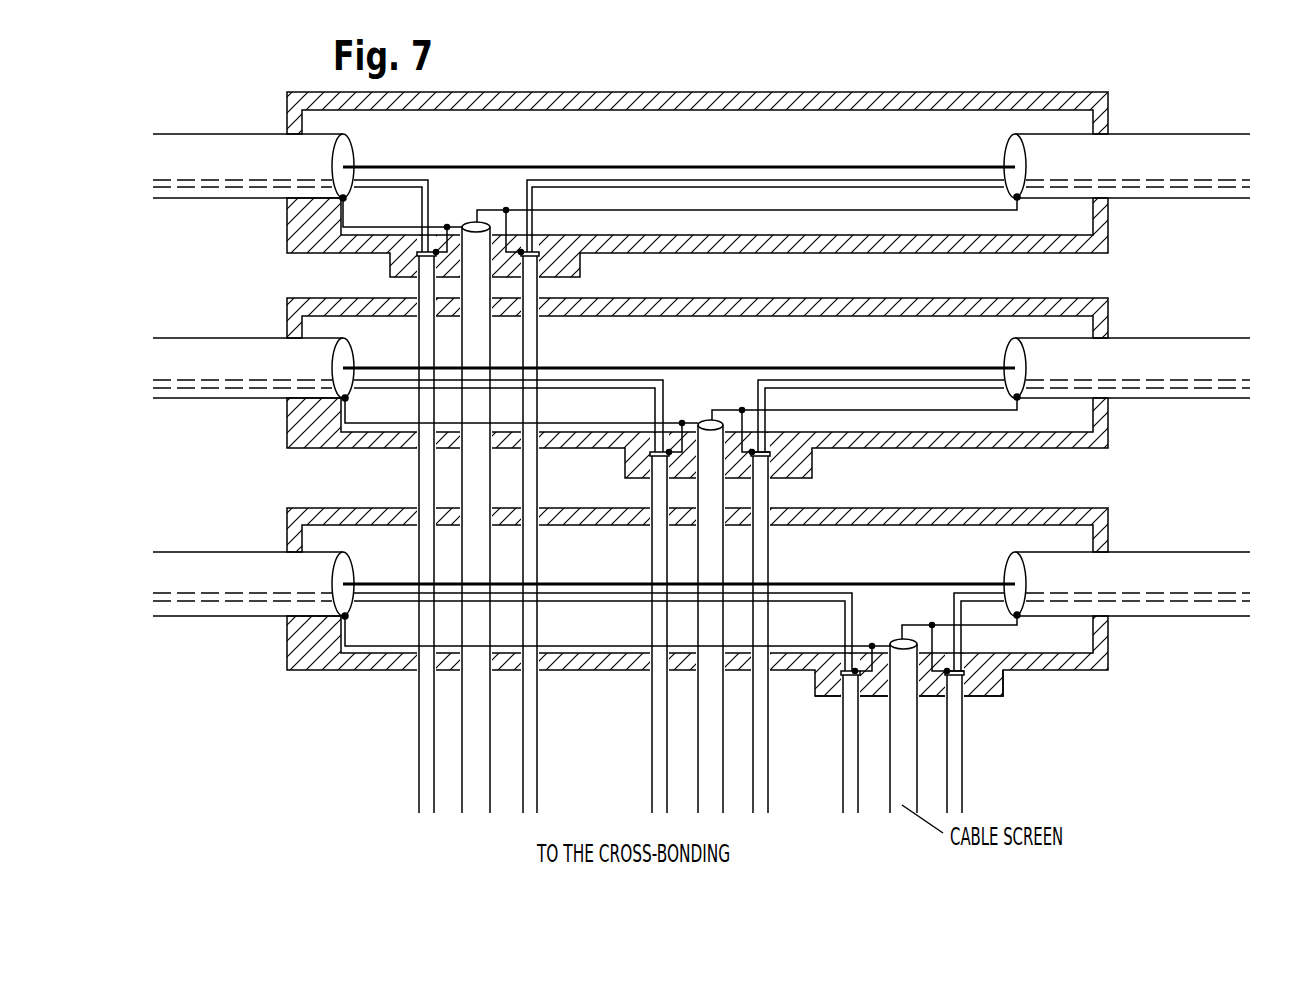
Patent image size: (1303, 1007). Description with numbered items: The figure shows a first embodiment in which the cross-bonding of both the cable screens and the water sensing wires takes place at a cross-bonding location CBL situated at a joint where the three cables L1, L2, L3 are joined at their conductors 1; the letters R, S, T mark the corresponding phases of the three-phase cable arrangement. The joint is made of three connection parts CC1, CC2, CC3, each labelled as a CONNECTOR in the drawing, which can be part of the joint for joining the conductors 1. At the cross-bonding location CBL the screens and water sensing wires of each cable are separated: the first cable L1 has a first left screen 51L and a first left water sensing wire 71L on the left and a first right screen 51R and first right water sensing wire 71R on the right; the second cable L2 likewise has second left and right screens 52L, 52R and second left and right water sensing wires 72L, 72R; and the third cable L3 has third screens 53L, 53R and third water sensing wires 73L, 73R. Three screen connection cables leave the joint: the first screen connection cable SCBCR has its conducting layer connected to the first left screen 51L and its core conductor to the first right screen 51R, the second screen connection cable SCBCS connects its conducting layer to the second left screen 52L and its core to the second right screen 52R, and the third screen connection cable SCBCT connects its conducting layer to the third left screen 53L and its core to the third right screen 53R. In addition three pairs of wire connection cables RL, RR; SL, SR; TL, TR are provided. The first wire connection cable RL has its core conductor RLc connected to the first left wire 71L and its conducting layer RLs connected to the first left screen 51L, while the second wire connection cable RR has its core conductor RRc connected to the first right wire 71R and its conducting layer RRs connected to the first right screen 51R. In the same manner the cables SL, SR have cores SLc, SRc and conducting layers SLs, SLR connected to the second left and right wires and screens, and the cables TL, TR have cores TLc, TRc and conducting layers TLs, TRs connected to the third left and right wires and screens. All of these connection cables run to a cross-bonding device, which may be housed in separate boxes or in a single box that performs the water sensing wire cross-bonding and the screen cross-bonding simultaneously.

The cross-bonding location CBL is at (727, 382).
The first connection part CC1 is at (1108, 101).
The second connection part CC2 is at (1108, 305).
The third connection part CC3 is at (1108, 518).
The connector housing CONNECTOR is at (1005, 683).
The conductor 1 is at (787, 167).
The first left screen 51L is at (253, 127).
The first right screen 51R is at (1200, 134).
The second left screen 52L is at (253, 342).
The second right screen 52R is at (1202, 338).
The third left screen 53L is at (253, 559).
The third right screen 53R is at (1202, 552).
The first left water sensing wire 71L is at (250, 180).
The first right water sensing wire 71R is at (1165, 179).
The second left water sensing wire 72L is at (270, 380).
The second right water sensing wire 72R is at (1197, 380).
The third left water sensing wire 73L is at (262, 595).
The third right water sensing wire 73R is at (1190, 595).
The first cable L1 is at (207, 134).
The second cable L2 is at (207, 338).
The third cable L3 is at (207, 552).
The R phase R is at (703, 164).
The S phase S is at (706, 369).
The T phase T is at (708, 586).
The core conductor of first wire connection cable RLc is at (424, 245).
The core conductor of second wire connection cable RRc is at (527, 215).
The conducting layer of first wire connection cable RLs is at (420, 268).
The conducting layer of second wire connection cable RRs is at (540, 268).
The first wire connection cable RL is at (383, 524).
The second wire connection cable RR is at (570, 514).
The core conductor of wire connection cable SL SLc is at (656, 445).
The core conductor of wire connection cable SR SRc is at (760, 448).
The first wire connection cable of second pair SL is at (623, 623).
The second wire connection cable of second pair SR is at (801, 623).
The conducting layer of wire connection cable SL SLs is at (655, 522).
The conducting layer of wire connection cable SR SLR is at (762, 522).
The core conductor of wire connection cable TL TLc is at (847, 665).
The core conductor of wire connection cable TR TRc is at (963, 668).
The first wire connection cable of third pair TL is at (821, 733).
The second wire connection cable of third pair TR is at (985, 733).
The conducting layer of wire connection cable TL TLs is at (842, 712).
The conducting layer of wire connection cable TR TRs is at (955, 750).
The first screen connection cable SCBCR is at (473, 767).
The second screen connection cable SCBCS is at (708, 764).
The third screen connection cable SCBCT is at (897, 777).